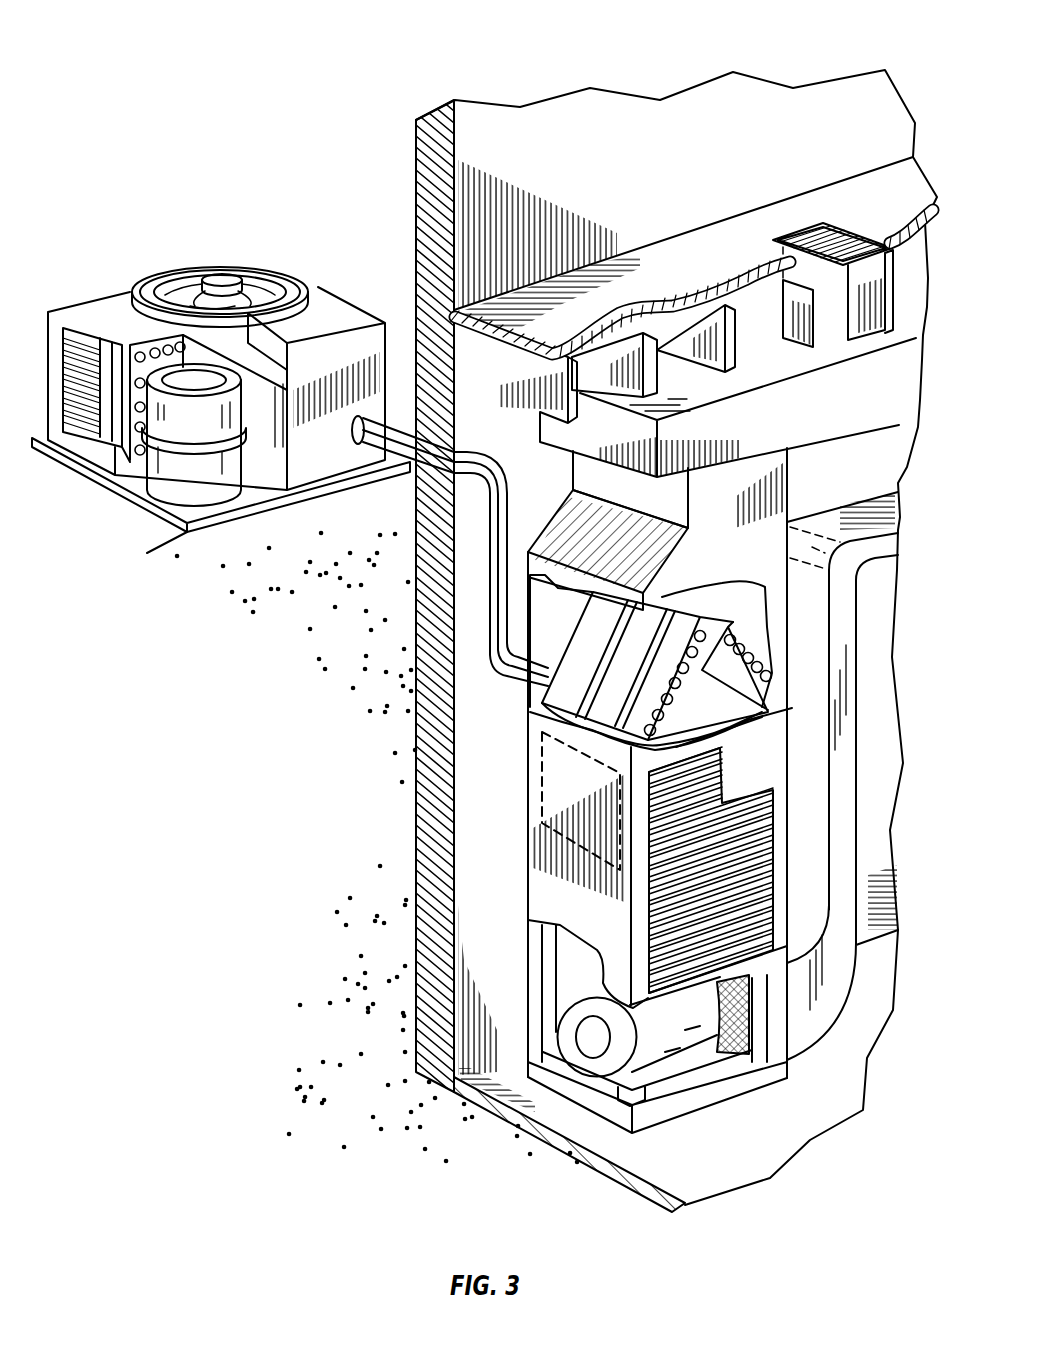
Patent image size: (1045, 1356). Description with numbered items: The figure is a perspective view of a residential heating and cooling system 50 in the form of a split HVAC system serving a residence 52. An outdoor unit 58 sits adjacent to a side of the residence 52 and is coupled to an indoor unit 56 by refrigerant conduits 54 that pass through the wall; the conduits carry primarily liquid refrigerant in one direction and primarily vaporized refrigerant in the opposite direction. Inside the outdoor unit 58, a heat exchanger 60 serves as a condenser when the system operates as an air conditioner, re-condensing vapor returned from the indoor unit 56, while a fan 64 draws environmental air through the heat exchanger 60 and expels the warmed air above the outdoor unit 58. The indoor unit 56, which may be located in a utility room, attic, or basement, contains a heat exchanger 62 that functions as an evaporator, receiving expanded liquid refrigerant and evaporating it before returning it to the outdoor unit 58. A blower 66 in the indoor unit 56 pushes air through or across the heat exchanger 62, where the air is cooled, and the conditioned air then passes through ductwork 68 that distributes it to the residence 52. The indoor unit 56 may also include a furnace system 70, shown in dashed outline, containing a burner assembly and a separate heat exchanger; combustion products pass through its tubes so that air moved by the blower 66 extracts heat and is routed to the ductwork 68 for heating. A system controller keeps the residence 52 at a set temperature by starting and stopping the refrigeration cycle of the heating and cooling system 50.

The residential heating and cooling system 50 is at (338, 47).
The residence 52 is at (577, 108).
The refrigerant conduits 54 is at (492, 528).
The indoor unit 56 is at (632, 855).
The outdoor unit 58 is at (221, 378).
The heat exchanger 60 is at (140, 355).
The heat exchanger 62 is at (602, 698).
The fan 64 is at (235, 272).
The blower 66 is at (583, 1060).
The ductwork 68 is at (866, 303).
The furnace system 70 is at (541, 760).